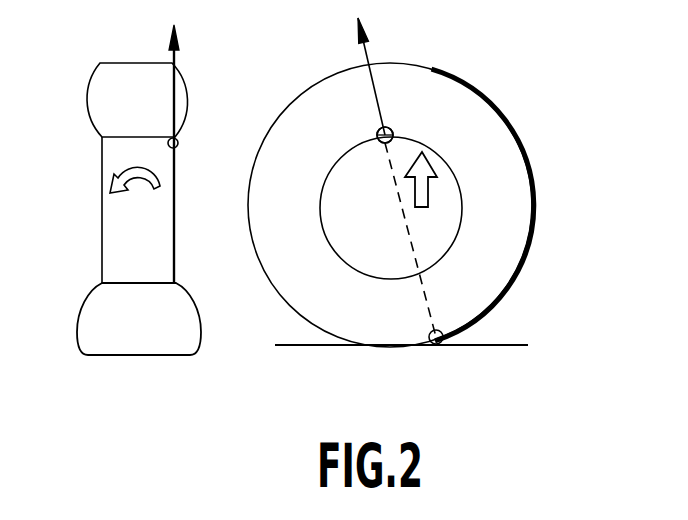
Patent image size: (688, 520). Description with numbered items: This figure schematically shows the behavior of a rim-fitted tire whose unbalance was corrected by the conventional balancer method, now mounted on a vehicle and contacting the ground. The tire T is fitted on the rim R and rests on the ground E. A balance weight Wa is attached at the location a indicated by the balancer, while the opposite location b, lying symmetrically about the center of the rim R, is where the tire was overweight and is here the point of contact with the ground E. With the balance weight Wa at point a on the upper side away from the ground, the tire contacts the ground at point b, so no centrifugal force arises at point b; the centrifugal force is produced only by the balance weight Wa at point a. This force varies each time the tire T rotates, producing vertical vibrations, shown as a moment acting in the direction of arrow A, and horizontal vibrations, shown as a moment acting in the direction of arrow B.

The tire T is at (130, 353).
The rim R is at (110, 231).
The location a is at (178, 143).
The balance weight Wa is at (382, 128).
The location b is at (445, 322).
The arrow A is at (424, 199).
The arrow B is at (135, 195).
The ground E is at (511, 345).